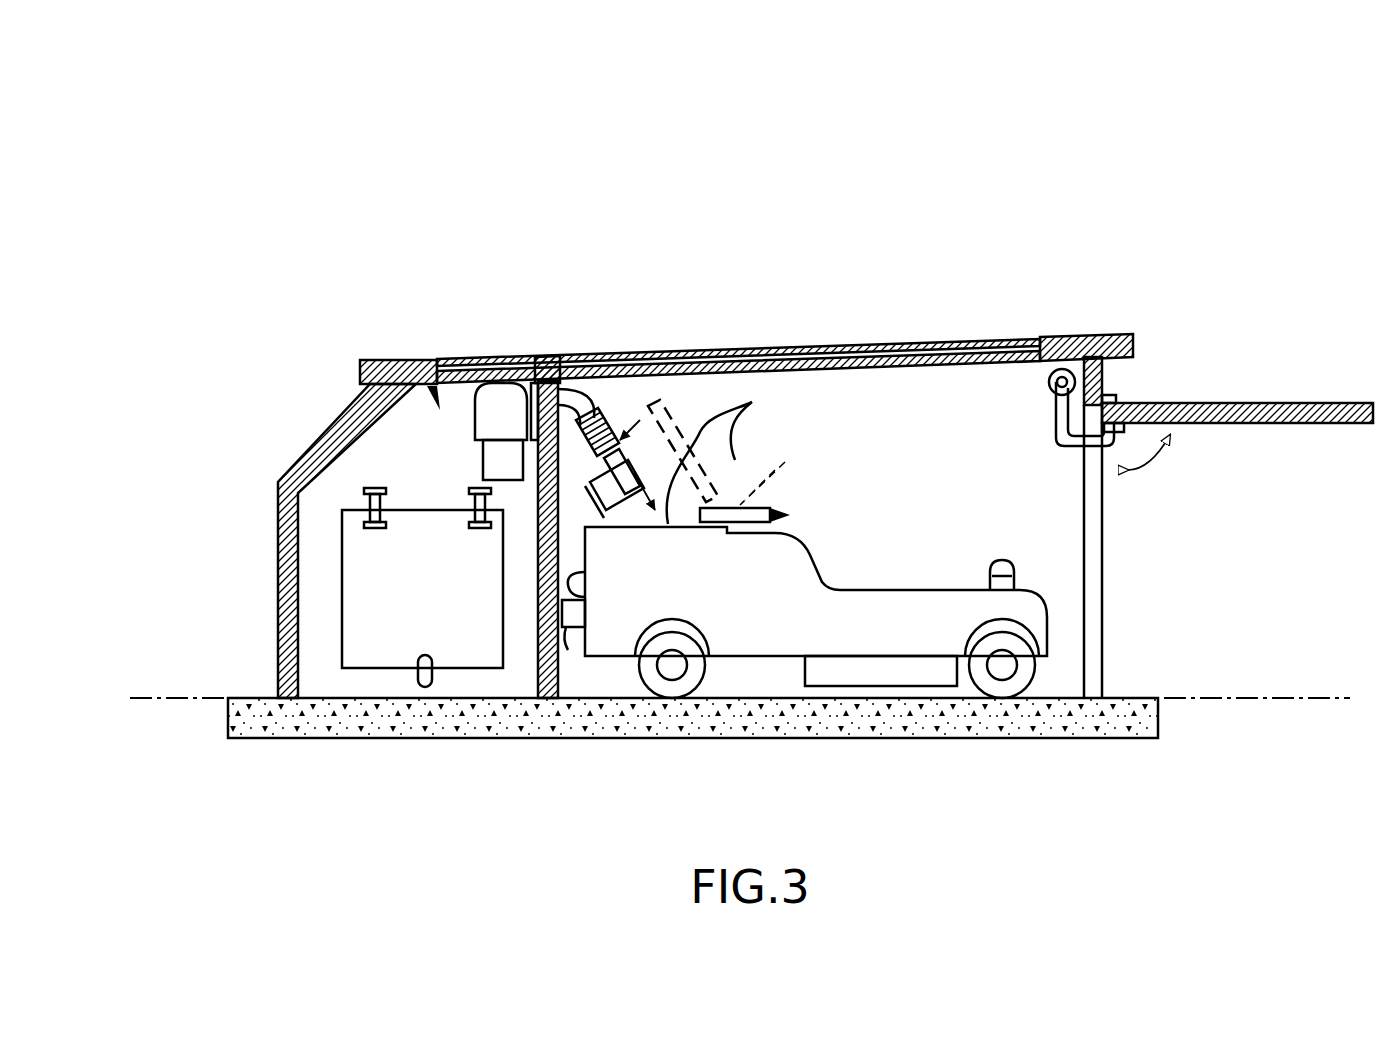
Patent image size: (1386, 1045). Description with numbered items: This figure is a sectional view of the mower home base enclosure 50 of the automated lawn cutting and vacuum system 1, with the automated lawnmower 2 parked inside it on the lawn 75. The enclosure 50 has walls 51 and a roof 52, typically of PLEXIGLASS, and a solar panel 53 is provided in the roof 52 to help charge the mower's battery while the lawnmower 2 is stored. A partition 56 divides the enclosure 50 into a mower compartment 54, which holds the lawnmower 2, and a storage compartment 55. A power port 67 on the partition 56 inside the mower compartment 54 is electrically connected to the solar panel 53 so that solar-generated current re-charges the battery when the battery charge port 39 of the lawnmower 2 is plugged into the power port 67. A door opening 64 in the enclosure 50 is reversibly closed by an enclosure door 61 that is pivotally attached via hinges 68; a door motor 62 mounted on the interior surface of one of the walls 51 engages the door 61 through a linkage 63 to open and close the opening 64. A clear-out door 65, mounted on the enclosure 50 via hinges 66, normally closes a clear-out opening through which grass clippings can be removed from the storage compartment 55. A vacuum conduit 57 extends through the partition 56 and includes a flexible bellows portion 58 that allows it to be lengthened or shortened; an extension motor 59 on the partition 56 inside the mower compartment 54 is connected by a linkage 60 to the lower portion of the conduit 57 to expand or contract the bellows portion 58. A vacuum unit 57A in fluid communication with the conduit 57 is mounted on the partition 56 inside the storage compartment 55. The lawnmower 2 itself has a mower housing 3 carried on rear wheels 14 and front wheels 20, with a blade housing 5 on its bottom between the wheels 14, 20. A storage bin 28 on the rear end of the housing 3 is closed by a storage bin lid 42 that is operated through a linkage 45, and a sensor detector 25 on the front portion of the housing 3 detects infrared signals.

The automated lawn cutting and vacuum system 1 is at (1178, 164).
The automated lawnmower 2 is at (850, 500).
The mower housing 3 is at (825, 560).
The blade housing 5 is at (800, 680).
The rear wheels 14 is at (648, 690).
The front wheels 20 is at (980, 690).
The sensor detector 25 is at (1000, 560).
The storage bin 28 is at (570, 550).
The battery charge port 39 is at (585, 582).
The storage bin lid 42 is at (678, 425).
The linkage 45 is at (780, 472).
The mower home base enclosure 50 is at (1142, 316).
The walls 51 is at (278, 566).
The roof 52 is at (748, 352).
The solar panel 53 is at (538, 370).
The mower compartment 54 is at (905, 385).
The storage compartment 55 is at (392, 372).
The partition 56 is at (538, 612).
The vacuum conduit 57 is at (682, 368).
The vacuum unit 57A is at (447, 373).
The flexible bellows portion 58 is at (566, 366).
The extension motor 59 is at (628, 368).
The linkage 60 is at (522, 470).
The enclosure door 61 is at (1274, 403).
The door motor 62 is at (1008, 346).
The linkage 63 is at (1058, 445).
The door opening 64 is at (1103, 535).
The clear-out door 65 is at (342, 600).
The hinges 66 is at (473, 490).
The power port 67 is at (568, 650).
The hinges 68 is at (1106, 400).
The lawn 75 is at (1148, 700).